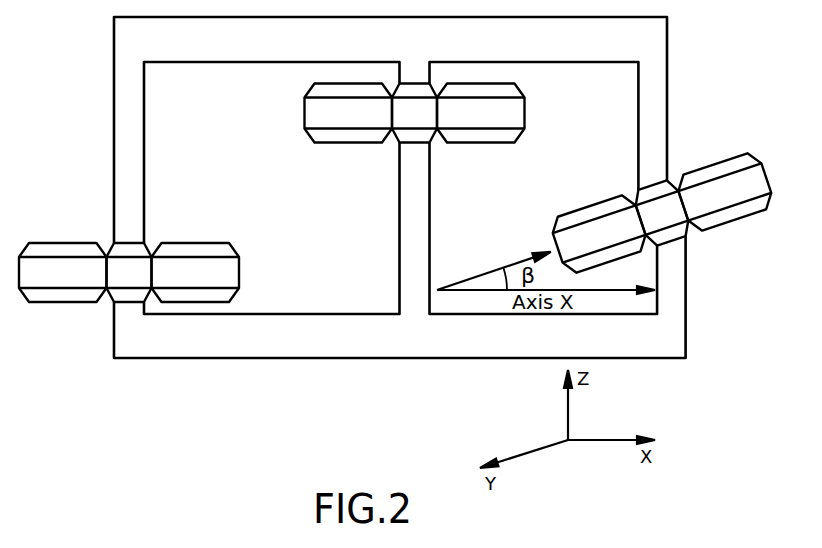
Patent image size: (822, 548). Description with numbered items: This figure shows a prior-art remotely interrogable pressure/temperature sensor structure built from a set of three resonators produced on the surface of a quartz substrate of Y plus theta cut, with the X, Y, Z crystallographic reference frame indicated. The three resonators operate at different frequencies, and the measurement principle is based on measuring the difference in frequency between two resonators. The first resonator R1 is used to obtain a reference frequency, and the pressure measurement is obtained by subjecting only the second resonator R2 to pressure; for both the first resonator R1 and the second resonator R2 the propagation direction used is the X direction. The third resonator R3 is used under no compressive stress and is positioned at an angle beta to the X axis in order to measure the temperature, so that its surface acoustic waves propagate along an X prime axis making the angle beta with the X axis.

The first resonator R1 is at (129, 256).
The second resonator R2 is at (415, 129).
The third resonator R3 is at (661, 213).